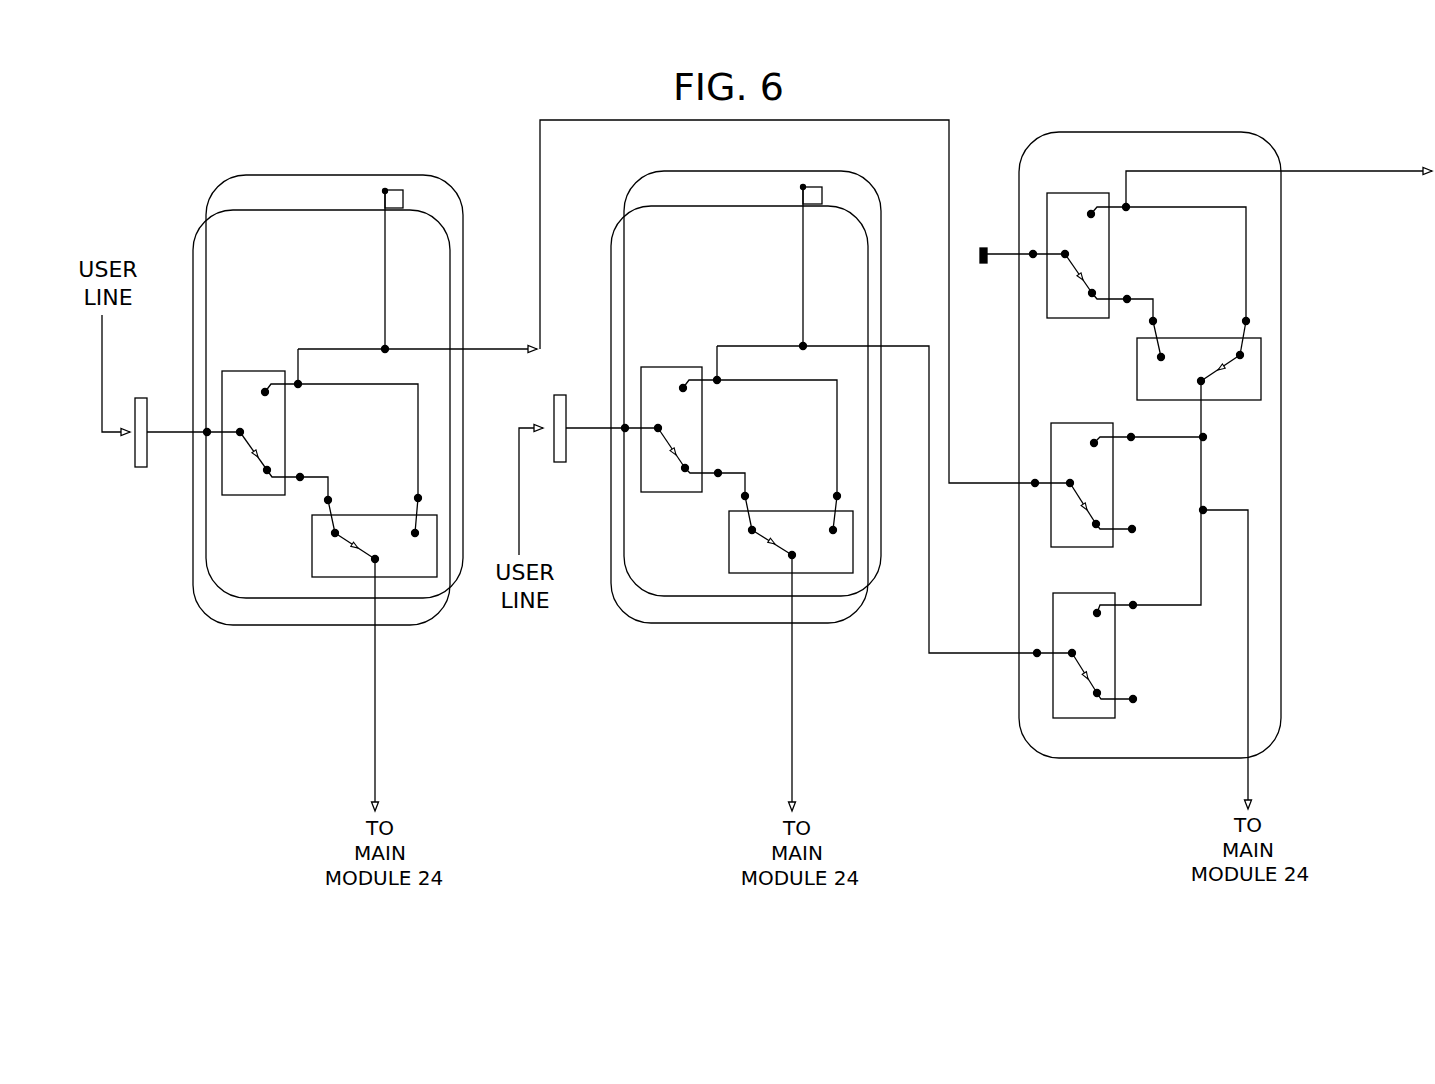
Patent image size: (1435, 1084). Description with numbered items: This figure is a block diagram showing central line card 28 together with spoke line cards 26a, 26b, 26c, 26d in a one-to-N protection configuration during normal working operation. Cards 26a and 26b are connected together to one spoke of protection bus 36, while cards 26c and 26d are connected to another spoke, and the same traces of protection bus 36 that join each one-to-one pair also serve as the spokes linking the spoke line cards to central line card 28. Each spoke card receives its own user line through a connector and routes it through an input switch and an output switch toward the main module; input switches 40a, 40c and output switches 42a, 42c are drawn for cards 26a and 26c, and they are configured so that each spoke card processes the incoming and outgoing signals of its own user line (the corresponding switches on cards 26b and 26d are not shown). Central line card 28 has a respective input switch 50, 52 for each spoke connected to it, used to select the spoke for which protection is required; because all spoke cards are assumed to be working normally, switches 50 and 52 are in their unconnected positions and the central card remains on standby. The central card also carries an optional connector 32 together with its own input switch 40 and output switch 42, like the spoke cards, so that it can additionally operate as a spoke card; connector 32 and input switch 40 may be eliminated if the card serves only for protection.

The spoke line card 26a is at (196, 240).
The spoke line card 26b is at (228, 185).
The spoke line card 26c is at (625, 213).
The spoke line card 26d is at (653, 175).
The central line card 28 is at (1033, 143).
The connector 32 is at (148, 412).
The protection bus 36 is at (503, 348).
The input switch 40 is at (1078, 320).
The input switch 40a is at (252, 496).
The input switch 40c is at (672, 494).
The output switch 42 is at (1137, 353).
The output switch 42a is at (312, 530).
The output switch 42c is at (729, 527).
The input switch 50 is at (1080, 549).
The input switch 52 is at (1083, 719).